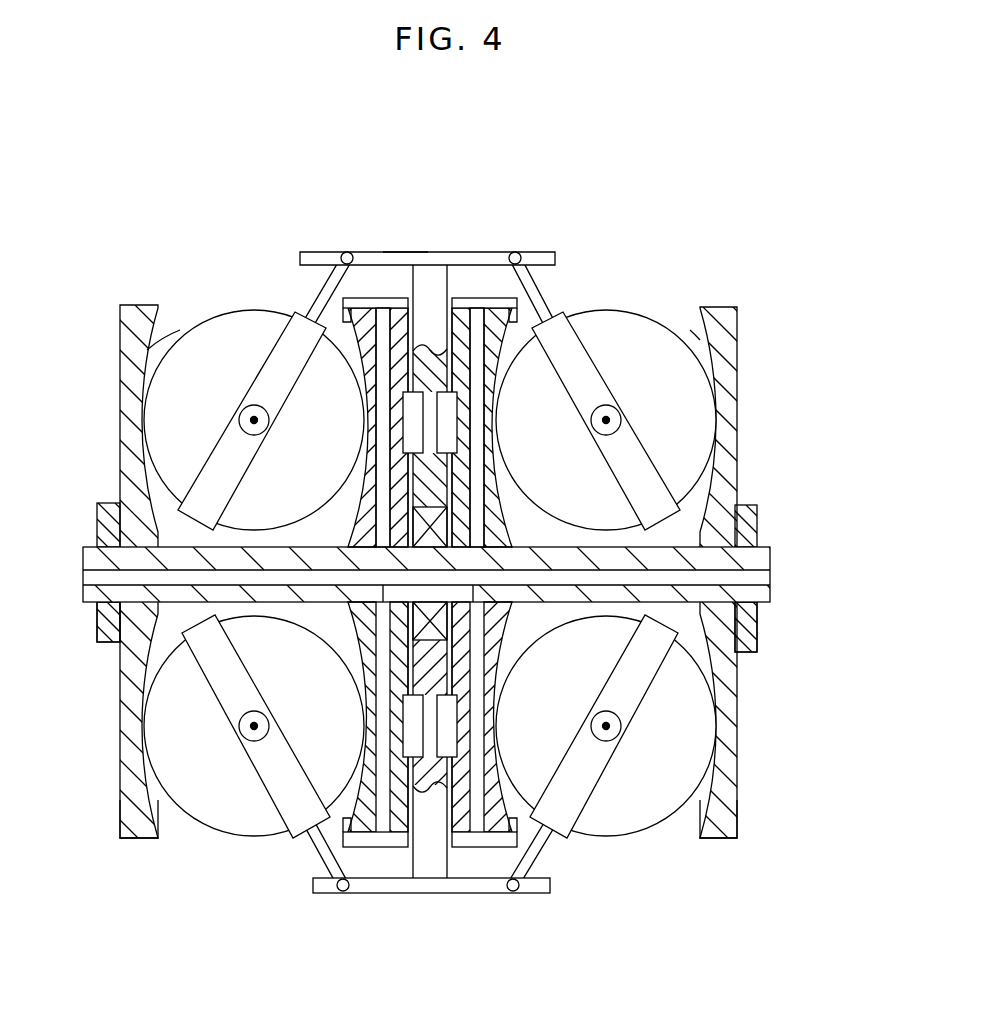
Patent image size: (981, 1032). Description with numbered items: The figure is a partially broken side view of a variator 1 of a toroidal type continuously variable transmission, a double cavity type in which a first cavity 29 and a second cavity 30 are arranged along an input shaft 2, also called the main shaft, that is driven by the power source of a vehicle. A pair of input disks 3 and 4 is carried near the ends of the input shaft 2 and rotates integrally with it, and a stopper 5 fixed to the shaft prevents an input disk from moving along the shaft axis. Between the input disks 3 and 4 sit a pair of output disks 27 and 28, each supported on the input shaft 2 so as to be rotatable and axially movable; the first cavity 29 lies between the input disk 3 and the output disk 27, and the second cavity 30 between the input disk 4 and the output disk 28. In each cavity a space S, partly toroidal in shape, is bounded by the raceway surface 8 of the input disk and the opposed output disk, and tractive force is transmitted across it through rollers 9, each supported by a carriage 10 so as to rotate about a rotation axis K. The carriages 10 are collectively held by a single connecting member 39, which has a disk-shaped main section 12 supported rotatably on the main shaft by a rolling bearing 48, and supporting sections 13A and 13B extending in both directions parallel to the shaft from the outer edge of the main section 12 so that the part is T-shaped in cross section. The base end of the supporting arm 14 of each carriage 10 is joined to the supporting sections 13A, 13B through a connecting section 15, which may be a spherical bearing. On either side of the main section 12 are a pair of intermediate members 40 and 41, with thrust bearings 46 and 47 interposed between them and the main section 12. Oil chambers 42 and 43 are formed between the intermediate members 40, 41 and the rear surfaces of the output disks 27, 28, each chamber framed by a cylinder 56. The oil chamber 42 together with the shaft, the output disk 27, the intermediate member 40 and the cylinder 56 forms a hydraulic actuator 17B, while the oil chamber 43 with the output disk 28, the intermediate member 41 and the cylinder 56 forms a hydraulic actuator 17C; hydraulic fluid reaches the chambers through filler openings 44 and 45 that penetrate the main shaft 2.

The variator 1 is at (486, 555).
The input shaft 2 is at (763, 545).
The input disk 3 is at (116, 338).
The input disk 4 is at (740, 341).
The stopper 5 is at (104, 643).
The raceway surface 8 is at (150, 350).
The roller 9 is at (213, 327).
The carriage 10 is at (254, 367).
The rotation axis K is at (239, 421).
The main section 12 is at (446, 282).
The supporting section 13A is at (362, 257).
The supporting section 13B is at (512, 252).
The supporting arm 14 is at (320, 298).
The connecting section 15 is at (342, 254).
The hydraulic actuator 17B is at (385, 856).
The hydraulic actuator 17C is at (468, 856).
The output disk 27 is at (360, 847).
The output disk 28 is at (493, 847).
The first cavity 29 is at (160, 838).
The second cavity 30 is at (680, 840).
The connecting member 39 is at (384, 247).
The intermediate member 40 is at (398, 347).
The intermediate member 41 is at (465, 348).
The oil chamber 42 is at (350, 478).
The oil chamber 43 is at (480, 468).
The filler opening 44 is at (90, 578).
The filler opening 45 is at (757, 582).
The thrust bearing 46 is at (403, 432).
The thrust bearing 47 is at (457, 423).
The rolling bearing 48 is at (447, 532).
The cylinder 56 is at (368, 298).
The space S is at (340, 542).